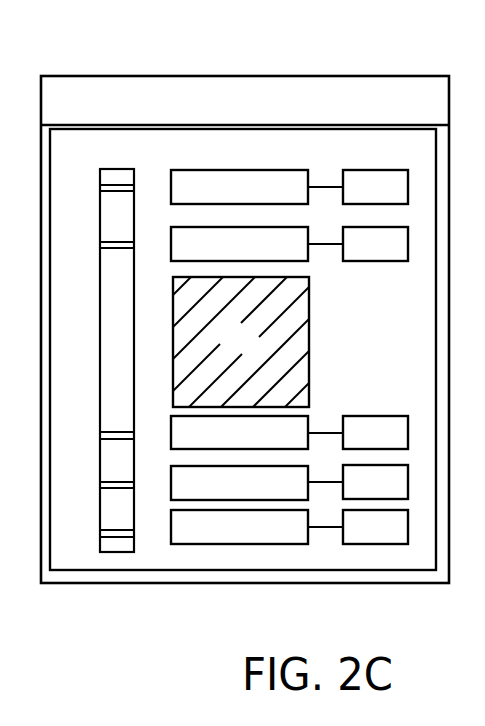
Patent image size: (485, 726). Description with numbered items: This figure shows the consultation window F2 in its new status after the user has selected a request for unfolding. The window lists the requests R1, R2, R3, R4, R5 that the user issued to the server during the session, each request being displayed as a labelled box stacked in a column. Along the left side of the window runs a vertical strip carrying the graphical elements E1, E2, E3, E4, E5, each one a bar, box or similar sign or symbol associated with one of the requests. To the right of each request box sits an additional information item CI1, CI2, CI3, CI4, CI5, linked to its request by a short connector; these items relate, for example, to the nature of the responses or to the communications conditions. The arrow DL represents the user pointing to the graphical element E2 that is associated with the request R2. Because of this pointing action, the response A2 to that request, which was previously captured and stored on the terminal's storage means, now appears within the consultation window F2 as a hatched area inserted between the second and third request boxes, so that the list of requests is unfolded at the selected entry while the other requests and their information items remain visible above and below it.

The consultation window F2 is at (190, 590).
The pointing action DL is at (73, 268).
The graphical element E1 is at (104, 190).
The graphical element E2 is at (106, 246).
The graphical element E3 is at (113, 436).
The graphical element E4 is at (111, 485).
The graphical element E5 is at (111, 533).
The request R1 is at (239, 188).
The request R2 is at (239, 245).
The request R3 is at (239, 434).
The request R4 is at (239, 484).
The request R5 is at (239, 528).
The additional information item CI1 is at (358, 188).
The additional information item CI2 is at (358, 245).
The additional information item CI3 is at (358, 434).
The additional information item CI4 is at (358, 483).
The additional information item CI5 is at (358, 528).
The response A2 is at (241, 342).